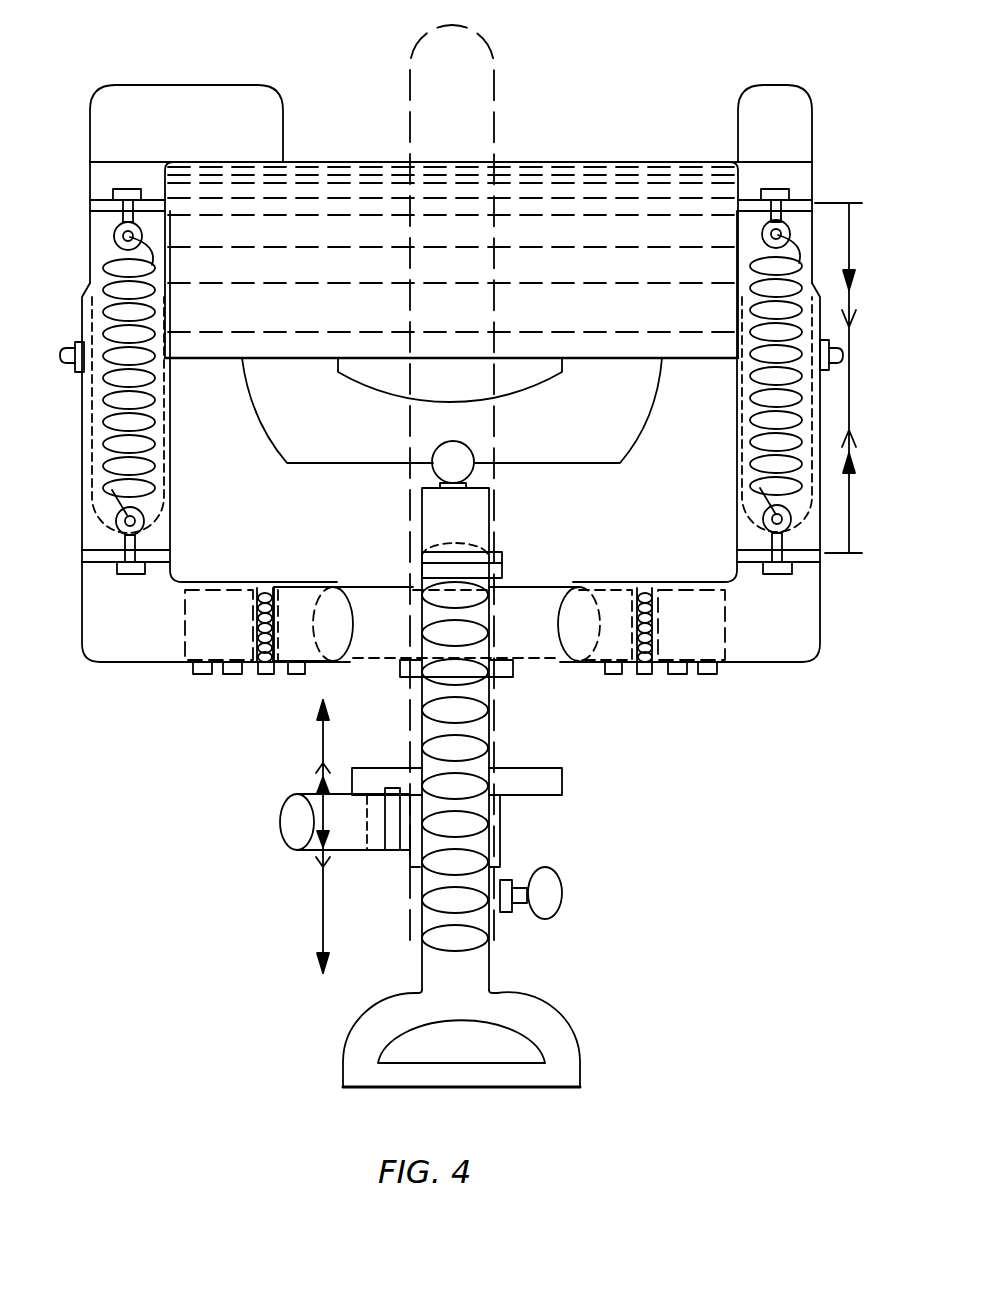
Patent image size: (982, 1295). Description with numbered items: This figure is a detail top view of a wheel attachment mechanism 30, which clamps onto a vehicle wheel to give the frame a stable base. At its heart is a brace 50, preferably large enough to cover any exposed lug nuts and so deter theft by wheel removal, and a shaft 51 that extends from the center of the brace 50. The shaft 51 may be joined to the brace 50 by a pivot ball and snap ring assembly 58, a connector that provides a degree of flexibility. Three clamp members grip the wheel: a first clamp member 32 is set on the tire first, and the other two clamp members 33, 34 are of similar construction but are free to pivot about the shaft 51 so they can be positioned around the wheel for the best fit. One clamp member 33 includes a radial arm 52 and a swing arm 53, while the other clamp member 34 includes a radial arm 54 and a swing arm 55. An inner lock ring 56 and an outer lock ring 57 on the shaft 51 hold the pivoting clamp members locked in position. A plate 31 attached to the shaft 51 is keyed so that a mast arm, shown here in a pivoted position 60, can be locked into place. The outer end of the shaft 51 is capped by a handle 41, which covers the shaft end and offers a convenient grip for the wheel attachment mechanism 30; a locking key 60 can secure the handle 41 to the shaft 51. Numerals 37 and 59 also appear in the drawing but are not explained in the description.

The wheel attachment mechanism 30 is at (827, 178).
The plate 31 is at (375, 783).
The first clamp member 32 is at (497, 97).
The clamp member 33 is at (86, 200).
The clamp member 34 is at (817, 147).
The spring housing 37 is at (262, 670).
The handle 41 is at (500, 1045).
The brace 50 is at (588, 410).
The shaft 51 is at (437, 513).
The radial arm 52 is at (388, 603).
The swing arm 53 is at (170, 108).
The radial arm 54 is at (533, 637).
The swing arm 55 is at (763, 108).
The inner lock ring 56 is at (505, 558).
The outer lock ring 57 is at (410, 678).
The pivot ball and snap ring assembly 58 is at (462, 468).
The knob 59 is at (548, 890).
The locking key 60 is at (380, 833).